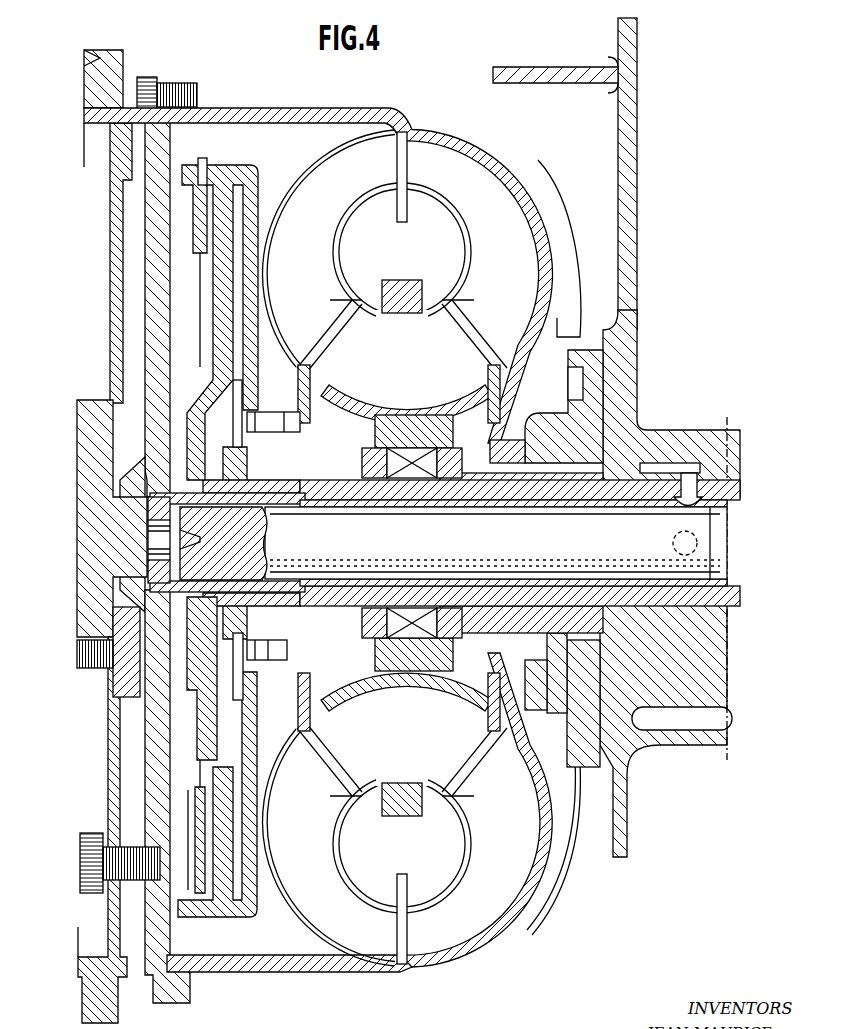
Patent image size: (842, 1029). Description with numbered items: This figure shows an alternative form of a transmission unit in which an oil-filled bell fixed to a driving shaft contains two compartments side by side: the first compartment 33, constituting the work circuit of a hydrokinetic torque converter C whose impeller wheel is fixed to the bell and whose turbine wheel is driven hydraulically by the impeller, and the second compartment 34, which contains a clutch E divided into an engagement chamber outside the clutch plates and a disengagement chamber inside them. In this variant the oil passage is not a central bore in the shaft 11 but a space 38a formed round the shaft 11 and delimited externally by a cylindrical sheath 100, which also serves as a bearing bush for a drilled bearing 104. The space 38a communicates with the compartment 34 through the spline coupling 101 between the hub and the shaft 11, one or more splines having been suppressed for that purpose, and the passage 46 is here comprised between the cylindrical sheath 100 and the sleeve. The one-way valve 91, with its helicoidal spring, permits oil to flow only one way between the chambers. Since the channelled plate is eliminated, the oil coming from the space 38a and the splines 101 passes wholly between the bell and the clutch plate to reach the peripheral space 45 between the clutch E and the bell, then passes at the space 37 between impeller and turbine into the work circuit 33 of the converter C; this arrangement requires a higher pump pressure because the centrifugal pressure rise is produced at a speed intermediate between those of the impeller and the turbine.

The shaft 11 is at (572, 553).
The first compartment 33 is at (307, 260).
The second compartment 34 is at (288, 142).
The space 37 is at (408, 132).
The space 38a is at (510, 510).
The peripheral space 45 is at (230, 145).
The passage 46 is at (350, 493).
The one-way valve 91 is at (250, 650).
The cylindrical sheath 100 is at (450, 507).
The spline coupling 101 is at (250, 505).
The drilled bearing 104 is at (720, 500).
The torque converter C is at (502, 158).
The clutch E is at (214, 918).